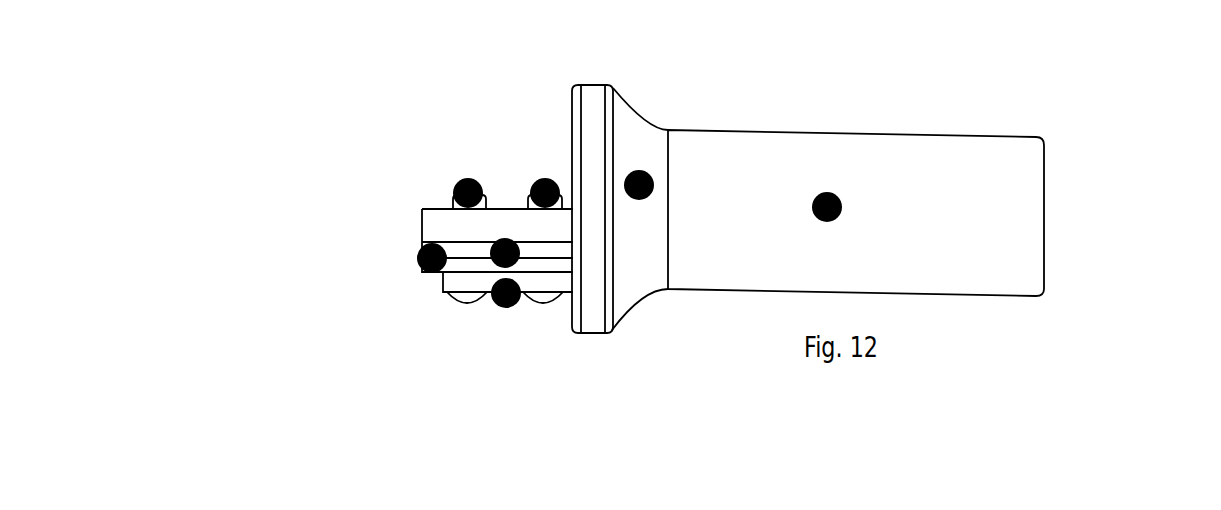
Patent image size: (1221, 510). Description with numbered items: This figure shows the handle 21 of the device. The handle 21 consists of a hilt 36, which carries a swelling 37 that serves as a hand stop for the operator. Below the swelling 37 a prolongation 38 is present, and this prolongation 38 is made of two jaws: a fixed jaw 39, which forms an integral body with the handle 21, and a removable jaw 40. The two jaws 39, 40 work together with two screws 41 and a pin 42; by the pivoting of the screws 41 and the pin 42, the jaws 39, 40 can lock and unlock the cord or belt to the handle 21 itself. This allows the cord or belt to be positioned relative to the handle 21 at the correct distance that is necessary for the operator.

The handle 21 is at (1100, 127).
The hilt 36 is at (833, 193).
The swelling 37 is at (643, 172).
The prolongation 38 is at (355, 177).
The fixed jaw 39 is at (506, 306).
The removable jaw 40 is at (422, 252).
The screws 41 is at (462, 183).
The pin 42 is at (503, 242).